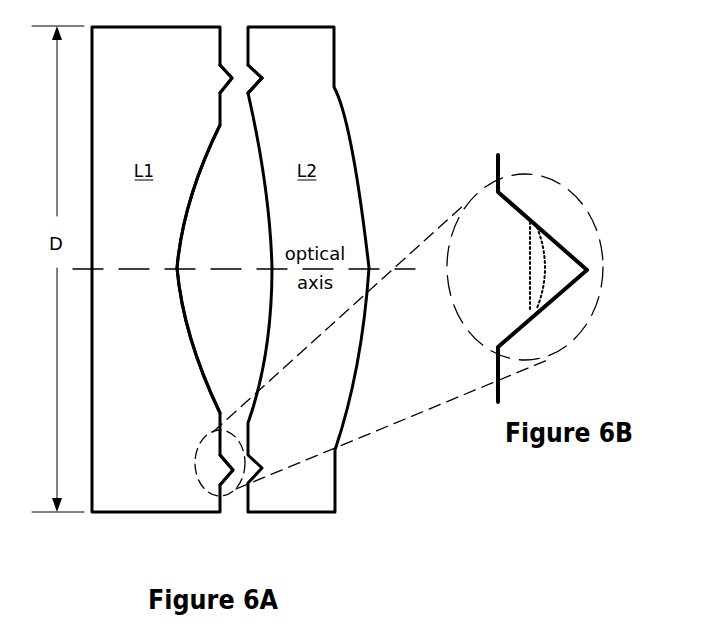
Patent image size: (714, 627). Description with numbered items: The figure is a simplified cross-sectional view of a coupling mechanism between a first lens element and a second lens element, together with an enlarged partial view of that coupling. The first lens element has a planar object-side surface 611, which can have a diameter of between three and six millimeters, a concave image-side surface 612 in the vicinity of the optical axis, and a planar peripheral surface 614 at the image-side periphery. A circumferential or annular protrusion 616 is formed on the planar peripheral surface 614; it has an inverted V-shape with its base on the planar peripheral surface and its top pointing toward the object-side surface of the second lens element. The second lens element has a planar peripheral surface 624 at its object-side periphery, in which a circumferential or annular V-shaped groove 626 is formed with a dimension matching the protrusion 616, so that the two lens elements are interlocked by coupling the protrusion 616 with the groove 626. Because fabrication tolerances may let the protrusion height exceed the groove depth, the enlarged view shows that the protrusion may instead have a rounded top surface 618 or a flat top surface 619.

In FIG. 6A, the planar object-side surface 611 is at (100, 383).
In FIG. 6A, the concave image-side surface 612 is at (182, 262).
In FIG. 6A, the planar peripheral surface 614 is at (208, 52).
In FIG. 6A, the protrusion 616 is at (212, 461).
In FIG. 6B, the protrusion 616 is at (548, 233).
In FIG. 6B, the rounded top surface 618 is at (550, 263).
In FIG. 6B, the flat top surface 619 is at (530, 257).
In FIG. 6A, the planar peripheral surface 624 is at (262, 52).
In FIG. 6A, the groove 626 is at (263, 81).